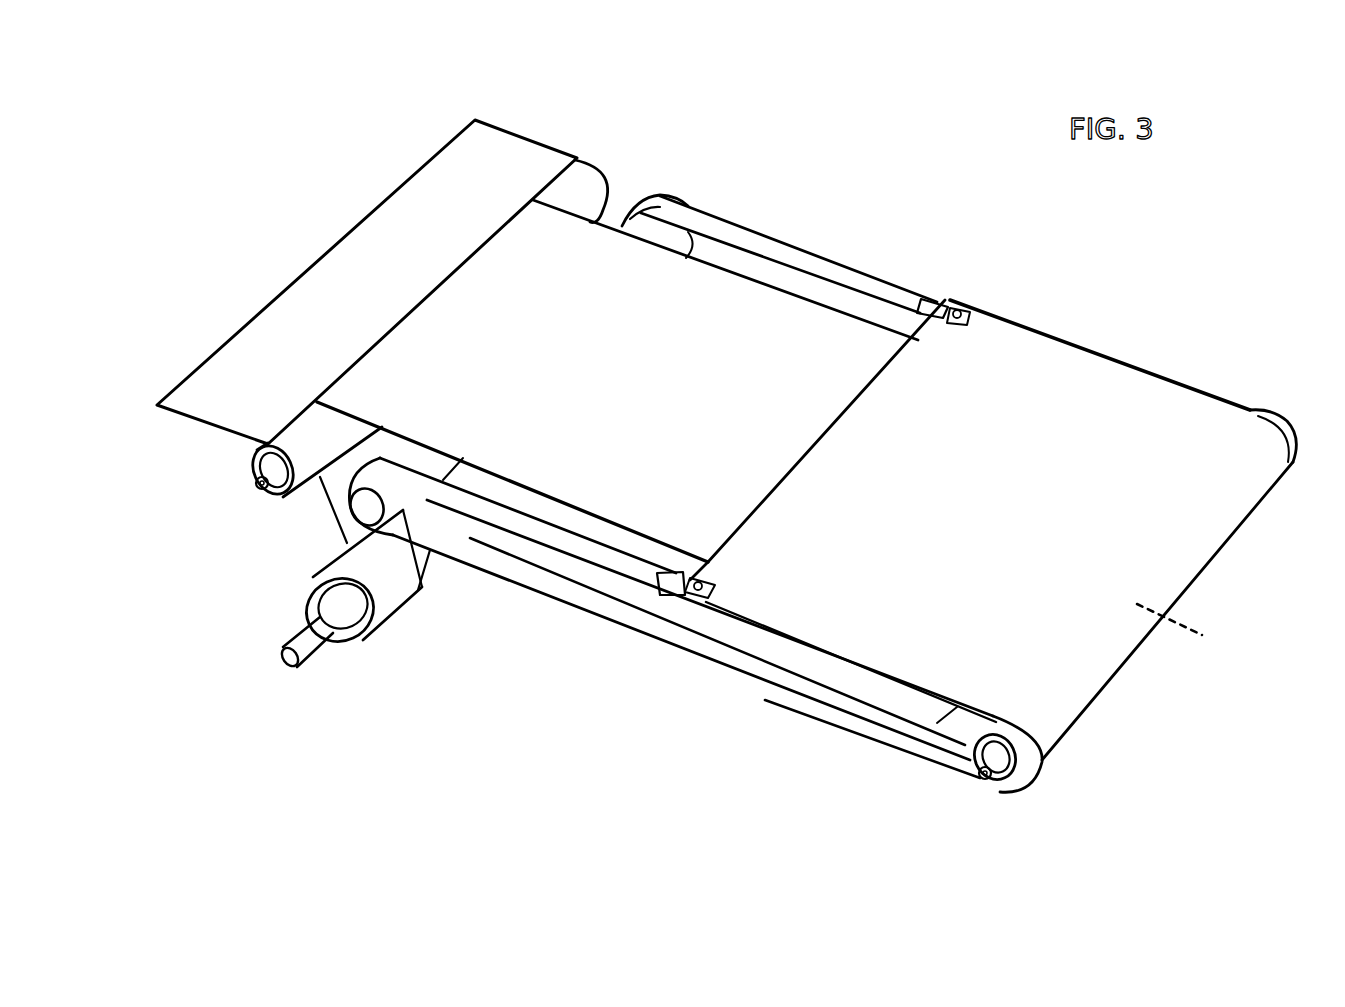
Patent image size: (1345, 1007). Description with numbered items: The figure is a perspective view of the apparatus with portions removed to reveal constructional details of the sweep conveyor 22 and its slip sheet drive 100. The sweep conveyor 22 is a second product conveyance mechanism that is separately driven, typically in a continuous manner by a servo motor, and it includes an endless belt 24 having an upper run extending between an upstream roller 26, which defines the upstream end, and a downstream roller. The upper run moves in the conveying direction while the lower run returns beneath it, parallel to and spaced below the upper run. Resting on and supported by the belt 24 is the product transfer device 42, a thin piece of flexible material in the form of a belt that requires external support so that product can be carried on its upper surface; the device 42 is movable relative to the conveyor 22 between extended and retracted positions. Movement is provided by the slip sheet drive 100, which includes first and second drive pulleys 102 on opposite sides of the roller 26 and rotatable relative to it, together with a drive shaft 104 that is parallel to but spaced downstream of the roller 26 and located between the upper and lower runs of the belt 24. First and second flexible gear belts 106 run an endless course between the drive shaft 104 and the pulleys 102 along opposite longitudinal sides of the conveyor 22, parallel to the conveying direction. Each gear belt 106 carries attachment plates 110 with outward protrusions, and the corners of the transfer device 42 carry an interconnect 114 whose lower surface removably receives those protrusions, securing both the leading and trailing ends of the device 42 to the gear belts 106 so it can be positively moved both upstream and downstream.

The sweep conveyor 22 is at (743, 268).
The endless belt 24 is at (592, 290).
The upstream roller 26 is at (1195, 629).
The product transfer device 42 is at (897, 583).
The slip sheet drive 100 is at (733, 676).
The drive pulley 102 is at (1277, 413).
The drive shaft 104 is at (670, 193).
The gear belt 106 is at (872, 282).
The attachment plate 110 is at (945, 303).
The interconnect 114 is at (710, 587).